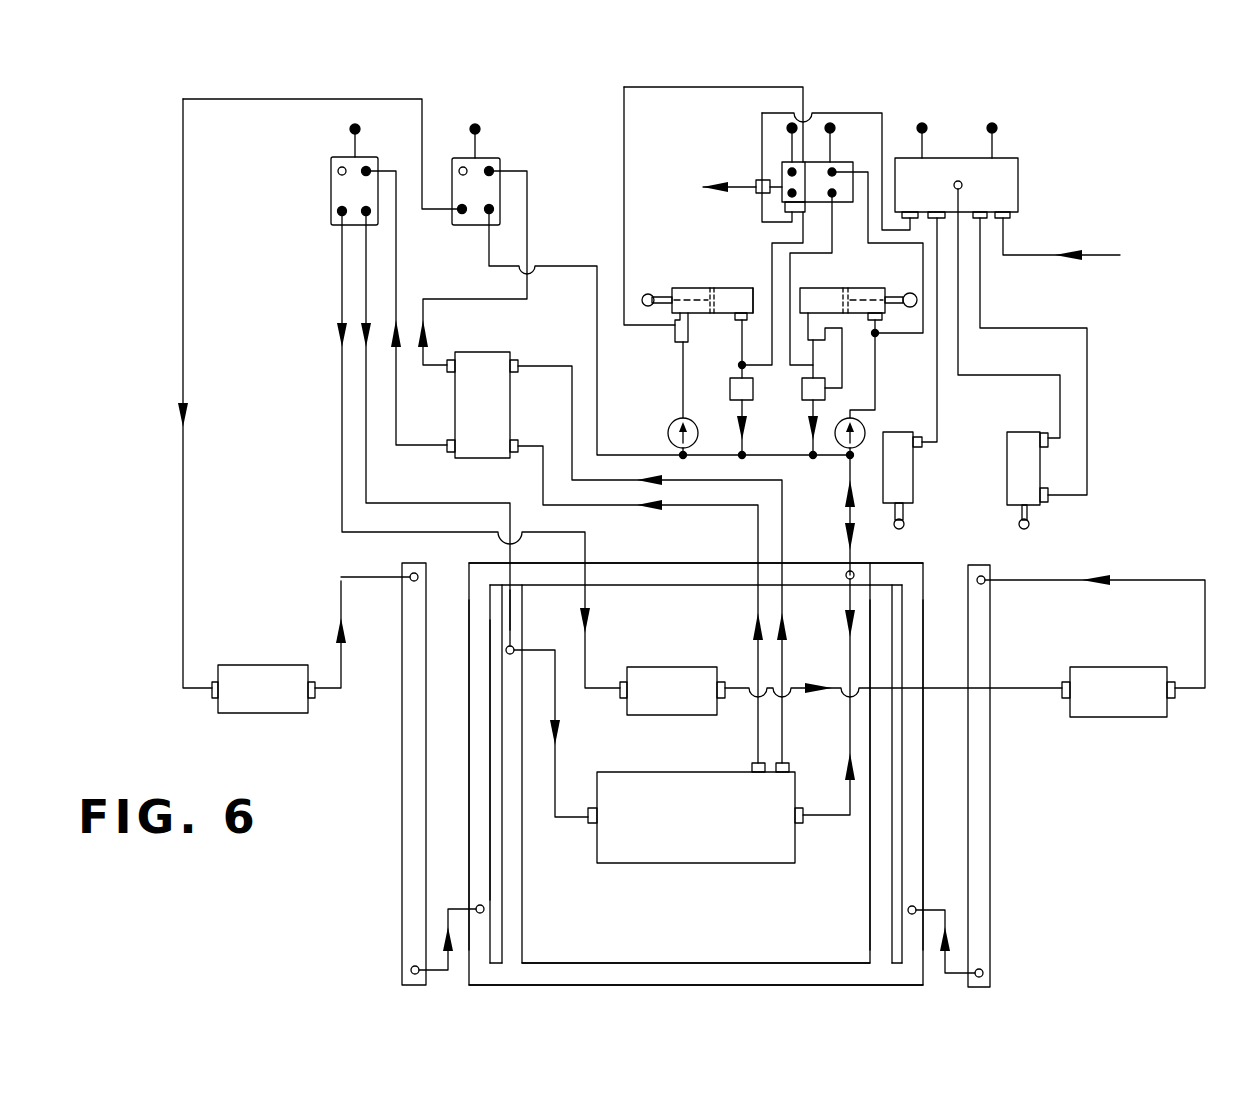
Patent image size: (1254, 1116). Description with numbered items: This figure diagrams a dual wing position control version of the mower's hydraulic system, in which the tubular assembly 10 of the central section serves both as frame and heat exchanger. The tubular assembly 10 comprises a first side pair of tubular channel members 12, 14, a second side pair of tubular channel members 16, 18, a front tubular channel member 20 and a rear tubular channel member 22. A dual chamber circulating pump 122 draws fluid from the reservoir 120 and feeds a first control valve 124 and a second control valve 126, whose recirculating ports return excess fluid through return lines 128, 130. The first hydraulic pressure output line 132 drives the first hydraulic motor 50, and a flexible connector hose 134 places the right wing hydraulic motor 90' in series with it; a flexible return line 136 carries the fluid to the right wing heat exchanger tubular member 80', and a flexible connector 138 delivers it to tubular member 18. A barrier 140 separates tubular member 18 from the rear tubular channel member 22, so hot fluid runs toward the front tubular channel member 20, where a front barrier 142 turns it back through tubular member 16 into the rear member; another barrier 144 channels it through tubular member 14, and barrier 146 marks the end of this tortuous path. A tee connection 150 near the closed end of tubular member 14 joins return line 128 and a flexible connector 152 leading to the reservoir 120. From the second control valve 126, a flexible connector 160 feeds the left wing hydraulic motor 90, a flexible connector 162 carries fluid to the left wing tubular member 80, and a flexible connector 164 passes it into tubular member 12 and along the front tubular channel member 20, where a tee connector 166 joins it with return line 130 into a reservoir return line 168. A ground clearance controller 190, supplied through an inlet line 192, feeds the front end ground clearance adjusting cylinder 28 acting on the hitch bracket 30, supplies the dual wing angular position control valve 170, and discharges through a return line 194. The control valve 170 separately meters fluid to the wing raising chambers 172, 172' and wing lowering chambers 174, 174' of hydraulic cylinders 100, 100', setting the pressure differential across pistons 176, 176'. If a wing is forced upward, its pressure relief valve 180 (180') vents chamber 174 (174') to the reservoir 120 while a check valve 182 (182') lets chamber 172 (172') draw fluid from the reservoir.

The tubular assembly 10 is at (938, 543).
The tubular channel member 12 is at (480, 737).
The tubular channel member 14 is at (512, 778).
The tubular channel member 16 is at (877, 902).
The tubular channel member 18 is at (910, 868).
The front tubular channel member 20 is at (672, 570).
The rear tubular channel member 22 is at (620, 968).
The fluid cylinder 28 is at (1022, 443).
The hitch bracket 30 is at (902, 475).
The first hydraulic motor 50 is at (658, 665).
The wing tubular member 80 is at (377, 774).
The right wing heat exchanger tubular member 80' is at (1009, 776).
The wing hydraulic motor 90 is at (263, 665).
The right wing hydraulic motor 90' is at (1118, 710).
The hydraulic cylinder 100 is at (863, 285).
The hydraulic cylinder 100' is at (697, 279).
The reservoir 120 is at (643, 770).
The dual chamber circulating pump 122 is at (496, 352).
The first control valve 124 is at (331, 190).
The second control valve 126 is at (466, 226).
The return line 128 is at (370, 473).
The return line 130 is at (597, 372).
The first hydraulic pressure output line 132 is at (342, 480).
The flexible connector hose 134 is at (1040, 688).
The flexible return line 136 is at (1132, 578).
The flexible connector 138 is at (947, 962).
The barrier 140 is at (912, 965).
The front barrier 142 is at (865, 565).
The barrier 144 is at (478, 963).
The barrier 146 is at (512, 588).
The tee connection 150 is at (514, 648).
The flexible connector 152 is at (556, 760).
The flexible connector 160 is at (183, 338).
The flexible connector 162 is at (332, 695).
The flexible connector 164 is at (438, 968).
The tee connector 166 is at (845, 572).
The reservoir return line 168 is at (848, 725).
The wing angular position control valve 170 is at (840, 162).
The wing raising chamber 172 is at (870, 350).
The wing raising chamber 172' is at (658, 331).
The wing lowering chamber 174 is at (820, 285).
The wing lowering chamber 174' is at (724, 264).
The cylinder piston 176 is at (861, 285).
The cylinder piston 176' is at (721, 318).
The pressure relief valve 180 is at (791, 418).
The pressure relief valve 180' is at (725, 406).
The check valve 182 is at (884, 480).
The check valve 182' is at (662, 426).
The ground clearance controller 190 is at (1010, 158).
The inlet line 192 is at (1015, 253).
The return line 194 is at (738, 180).